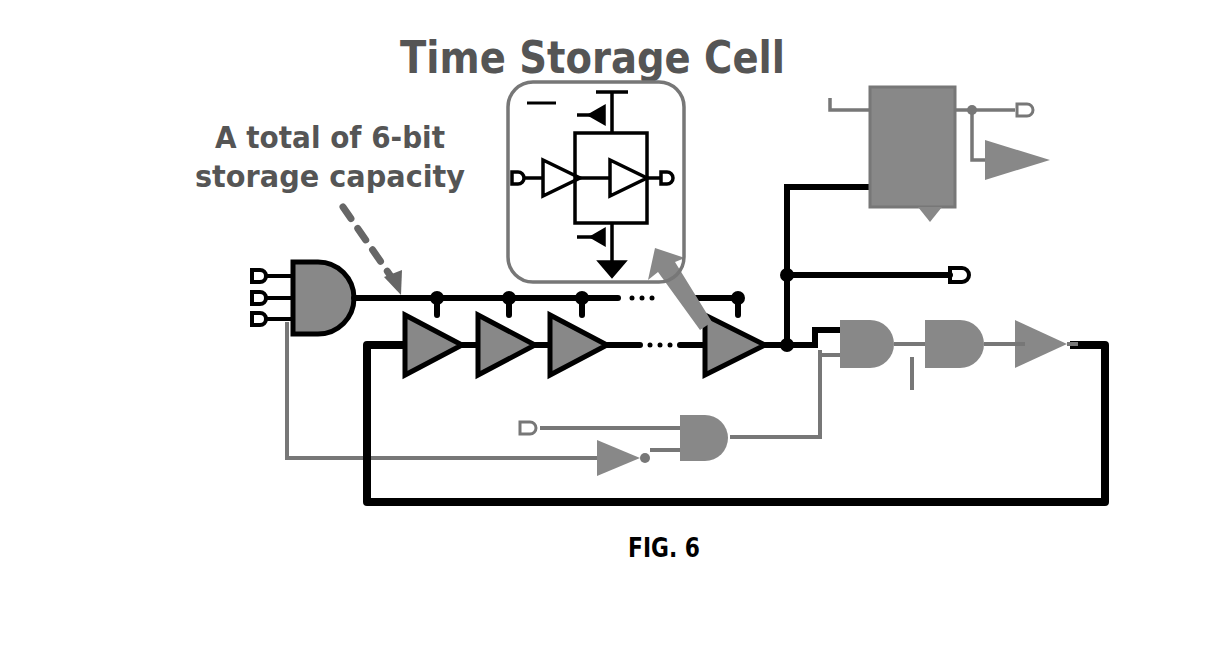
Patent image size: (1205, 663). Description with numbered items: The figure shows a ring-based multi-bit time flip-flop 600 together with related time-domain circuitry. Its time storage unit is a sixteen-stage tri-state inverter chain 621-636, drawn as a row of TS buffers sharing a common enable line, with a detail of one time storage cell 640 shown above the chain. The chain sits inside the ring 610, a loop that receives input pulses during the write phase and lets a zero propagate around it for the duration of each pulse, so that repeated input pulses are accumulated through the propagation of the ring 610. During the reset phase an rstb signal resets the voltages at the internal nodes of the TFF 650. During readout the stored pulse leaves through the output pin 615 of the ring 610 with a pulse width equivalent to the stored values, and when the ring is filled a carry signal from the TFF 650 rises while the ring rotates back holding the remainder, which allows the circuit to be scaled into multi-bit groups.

The ring-based multi-bit TFF 600 is at (1075, 57).
The ring 610 is at (1135, 392).
The output pin 615 is at (1019, 275).
The tri-state inverter chain first stage 621 is at (432, 362).
The tri-state inverter chain last stage 636 is at (735, 362).
The time storage cell 640 is at (619, 182).
The TFF 650 is at (964, 158).